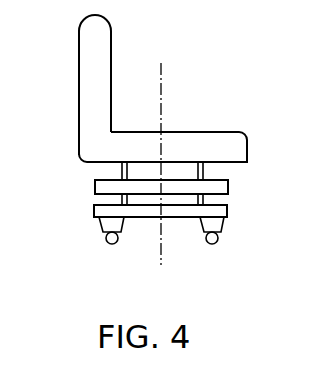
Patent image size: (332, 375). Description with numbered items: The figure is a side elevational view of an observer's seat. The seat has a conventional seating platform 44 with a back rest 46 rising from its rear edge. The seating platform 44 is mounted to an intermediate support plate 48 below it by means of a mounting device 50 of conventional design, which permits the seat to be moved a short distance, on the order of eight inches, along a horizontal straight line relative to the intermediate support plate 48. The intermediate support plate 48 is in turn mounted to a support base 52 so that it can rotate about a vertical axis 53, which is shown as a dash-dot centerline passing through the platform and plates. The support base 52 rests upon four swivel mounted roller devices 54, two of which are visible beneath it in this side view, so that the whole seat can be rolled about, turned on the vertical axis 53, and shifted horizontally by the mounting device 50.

The seating platform 44 is at (203, 129).
The back rest 46 is at (114, 52).
The intermediate support plate 48 is at (231, 186).
The mounting device 50 is at (120, 168).
The support base 52 is at (231, 214).
The vertical axis 53 is at (166, 242).
The swivel mounted roller devices 54 is at (108, 244).